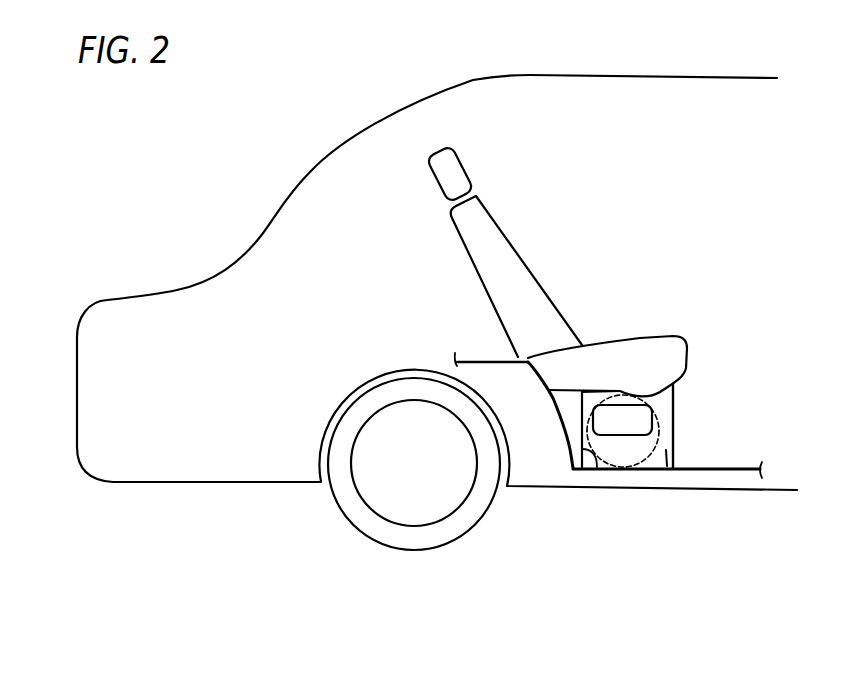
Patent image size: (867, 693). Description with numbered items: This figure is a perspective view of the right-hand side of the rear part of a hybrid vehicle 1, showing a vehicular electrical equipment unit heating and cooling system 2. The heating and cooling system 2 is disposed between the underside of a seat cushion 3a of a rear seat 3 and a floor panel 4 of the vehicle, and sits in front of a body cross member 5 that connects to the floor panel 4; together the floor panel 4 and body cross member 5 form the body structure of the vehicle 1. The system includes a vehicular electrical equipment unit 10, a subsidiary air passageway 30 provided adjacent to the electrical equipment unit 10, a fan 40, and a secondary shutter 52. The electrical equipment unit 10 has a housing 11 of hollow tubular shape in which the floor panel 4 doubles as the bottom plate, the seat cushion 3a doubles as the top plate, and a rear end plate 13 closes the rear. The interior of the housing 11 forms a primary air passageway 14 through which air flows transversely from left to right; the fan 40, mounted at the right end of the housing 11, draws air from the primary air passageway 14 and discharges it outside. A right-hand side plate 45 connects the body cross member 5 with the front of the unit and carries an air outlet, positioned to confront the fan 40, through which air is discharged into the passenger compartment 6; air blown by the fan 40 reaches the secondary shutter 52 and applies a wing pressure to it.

The hybrid vehicle 1 is at (294, 160).
The vehicular electrical equipment unit heating and cooling system 2 is at (700, 376).
The rear seat 3 is at (537, 272).
The seat cushion 3a is at (632, 340).
The floor panel 4 is at (723, 472).
The body cross member 5 is at (558, 442).
The passenger compartment 6 is at (628, 218).
The vehicular electrical equipment unit 10 is at (675, 420).
The housing 11 is at (676, 442).
The rear end plate 13 is at (593, 469).
The primary air passageway 14 is at (653, 460).
The subsidiary air passageway 30 is at (568, 405).
The fan 40 is at (637, 465).
The right-hand side plate 45 is at (667, 466).
The secondary shutter 52 is at (646, 410).